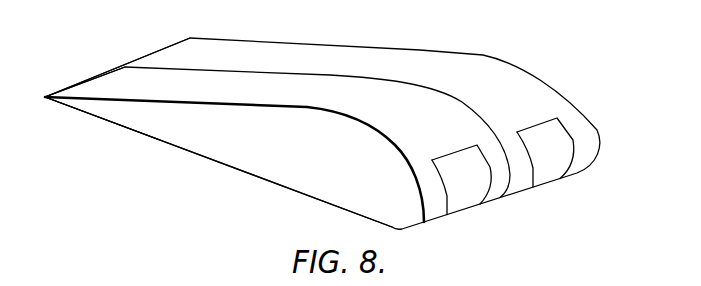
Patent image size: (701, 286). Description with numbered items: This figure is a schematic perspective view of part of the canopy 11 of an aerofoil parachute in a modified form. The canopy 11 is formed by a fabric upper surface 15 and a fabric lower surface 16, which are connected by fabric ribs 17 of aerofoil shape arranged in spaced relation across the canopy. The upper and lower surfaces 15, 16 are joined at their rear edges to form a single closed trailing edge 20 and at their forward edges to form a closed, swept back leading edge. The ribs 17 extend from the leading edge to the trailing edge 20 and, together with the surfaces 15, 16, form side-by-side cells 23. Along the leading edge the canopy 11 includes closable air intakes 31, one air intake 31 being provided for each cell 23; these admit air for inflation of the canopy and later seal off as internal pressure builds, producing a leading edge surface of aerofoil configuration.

The canopy 11 is at (434, 39).
The upper surface 15 is at (328, 58).
The lower surface 16 is at (200, 158).
The ribs 17 is at (153, 122).
The trailing edge 20 is at (82, 80).
The cells 23 is at (516, 91).
The air intake 31 is at (551, 168).